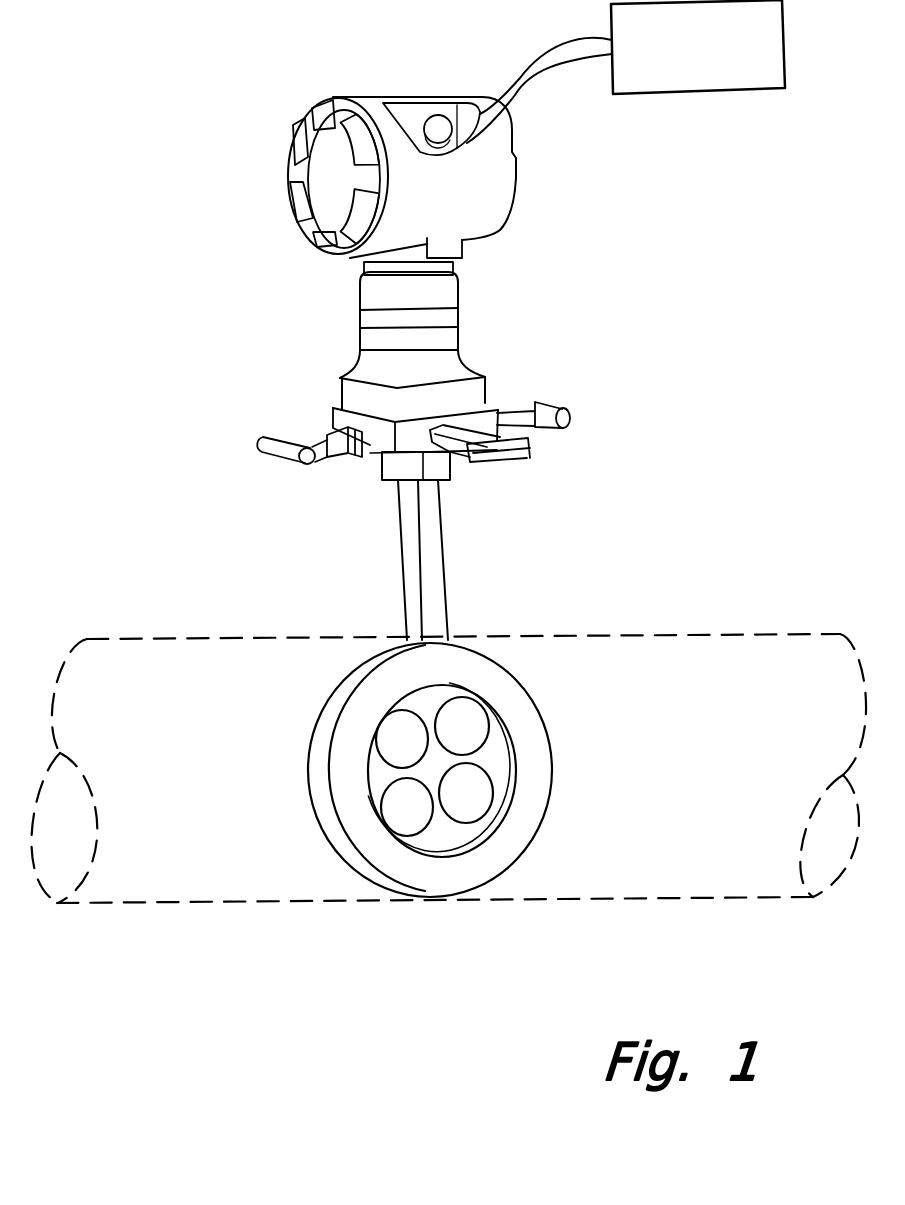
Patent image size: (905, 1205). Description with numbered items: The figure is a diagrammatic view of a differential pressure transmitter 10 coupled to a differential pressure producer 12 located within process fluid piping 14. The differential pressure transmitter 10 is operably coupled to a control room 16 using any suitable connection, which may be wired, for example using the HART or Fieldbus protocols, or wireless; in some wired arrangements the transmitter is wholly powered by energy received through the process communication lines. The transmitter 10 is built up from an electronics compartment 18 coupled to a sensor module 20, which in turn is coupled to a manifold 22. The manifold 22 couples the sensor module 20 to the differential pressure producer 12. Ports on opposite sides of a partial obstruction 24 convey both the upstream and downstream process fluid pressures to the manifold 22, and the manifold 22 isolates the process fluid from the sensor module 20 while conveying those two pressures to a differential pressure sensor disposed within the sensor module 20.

The differential pressure transmitter 10 is at (272, 119).
The differential pressure producer 12 is at (497, 677).
The piping 14 is at (662, 632).
The control room 16 is at (668, 95).
The electronics compartment 18 is at (483, 205).
The sensor module 20 is at (447, 322).
The manifold 22 is at (335, 417).
The partial obstruction 24 is at (465, 787).